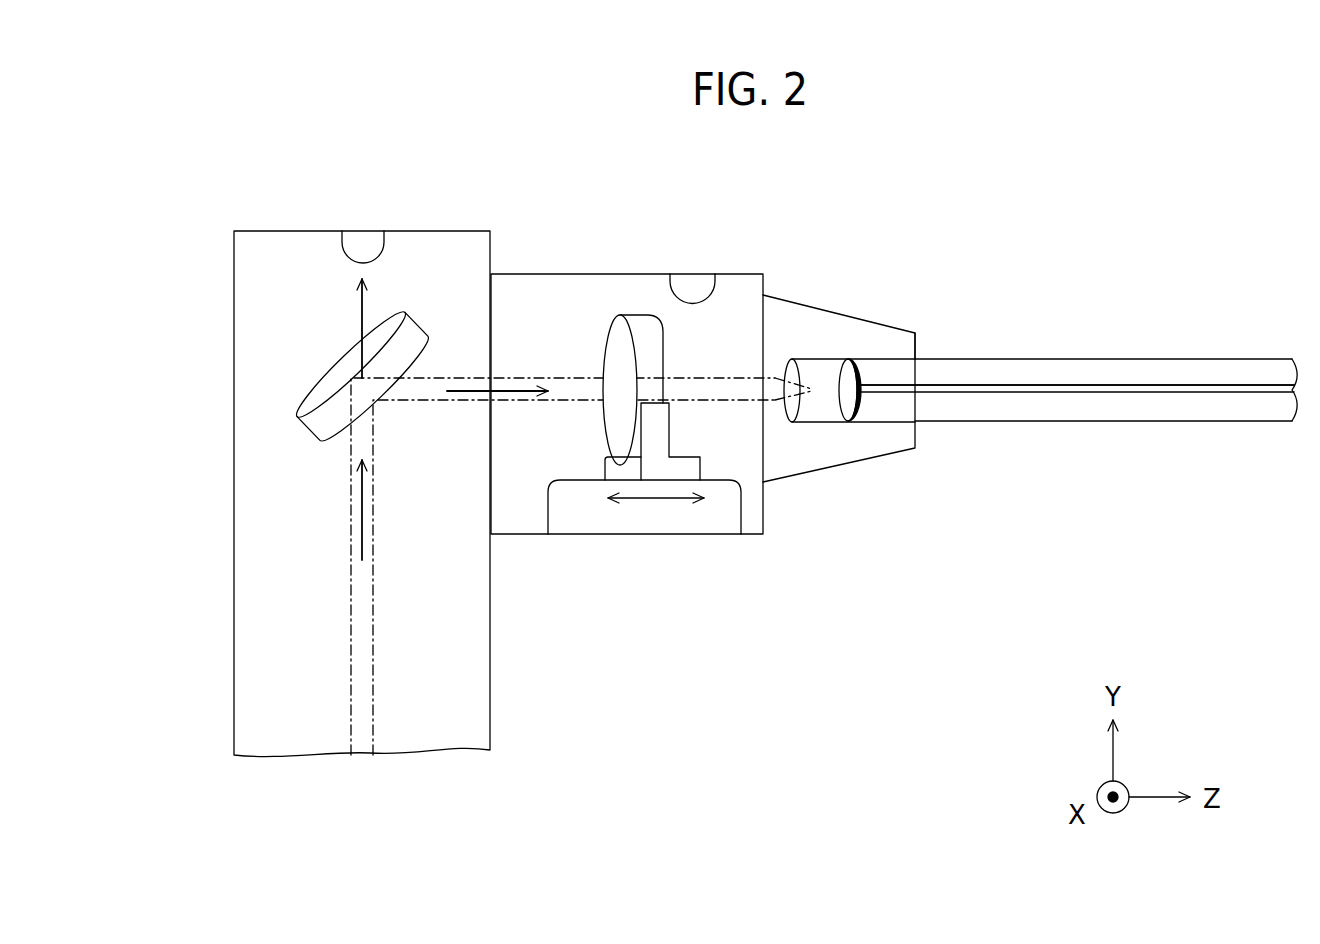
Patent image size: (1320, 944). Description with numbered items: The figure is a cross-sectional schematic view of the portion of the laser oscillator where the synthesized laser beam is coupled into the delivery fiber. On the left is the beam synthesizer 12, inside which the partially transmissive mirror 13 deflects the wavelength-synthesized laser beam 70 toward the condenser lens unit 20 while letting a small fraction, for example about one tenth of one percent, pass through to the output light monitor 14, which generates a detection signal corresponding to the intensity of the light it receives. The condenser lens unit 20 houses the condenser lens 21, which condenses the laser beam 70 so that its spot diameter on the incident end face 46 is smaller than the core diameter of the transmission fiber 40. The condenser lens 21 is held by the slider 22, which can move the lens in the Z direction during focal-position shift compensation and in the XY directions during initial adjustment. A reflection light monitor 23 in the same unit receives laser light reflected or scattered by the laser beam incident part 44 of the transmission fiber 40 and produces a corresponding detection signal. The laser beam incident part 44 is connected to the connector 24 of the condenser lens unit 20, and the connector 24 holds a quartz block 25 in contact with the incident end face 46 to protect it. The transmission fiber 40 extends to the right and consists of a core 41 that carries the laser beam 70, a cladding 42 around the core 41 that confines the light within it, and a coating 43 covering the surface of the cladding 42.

The beam synthesizer 12 is at (234, 262).
The partially transmissive mirror 13 is at (313, 384).
The output light monitor 14 is at (363, 242).
The condenser lens unit 20 is at (523, 273).
The condenser lens 21 is at (640, 325).
The slider 22 is at (658, 517).
The reflection light monitor 23 is at (693, 282).
The connector 24 is at (888, 336).
The quartz block 25 is at (825, 359).
The transmission fiber 40 is at (1100, 326).
The core 41 is at (1010, 394).
The cladding 42 is at (1076, 490).
The coating 43 is at (1157, 424).
The laser beam incident part 44 is at (906, 339).
The incident end face 46 is at (848, 426).
The laser beam 70 is at (358, 313).